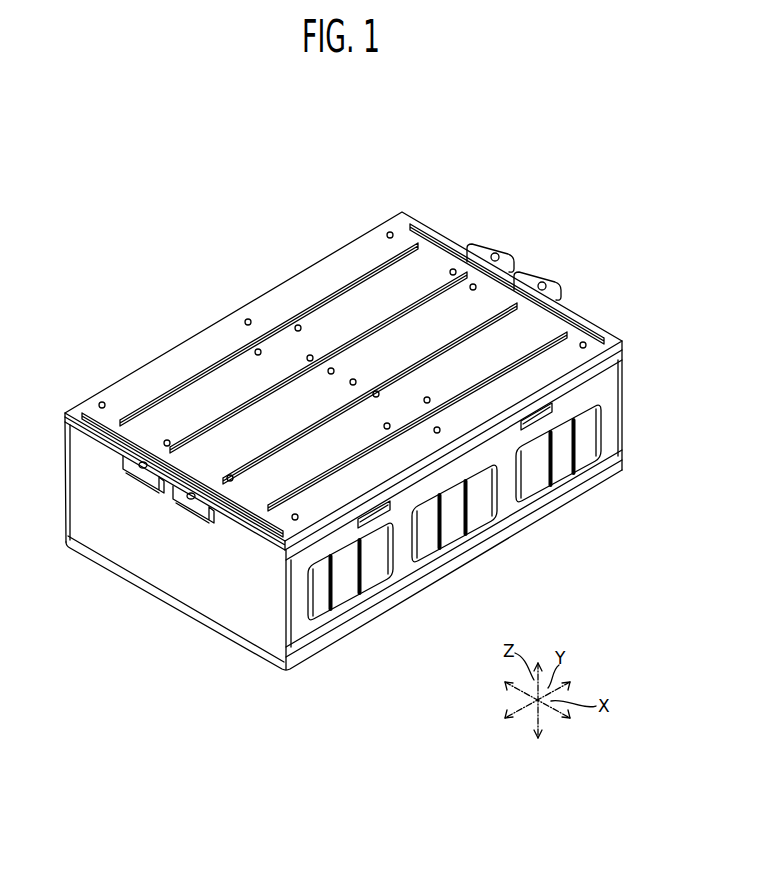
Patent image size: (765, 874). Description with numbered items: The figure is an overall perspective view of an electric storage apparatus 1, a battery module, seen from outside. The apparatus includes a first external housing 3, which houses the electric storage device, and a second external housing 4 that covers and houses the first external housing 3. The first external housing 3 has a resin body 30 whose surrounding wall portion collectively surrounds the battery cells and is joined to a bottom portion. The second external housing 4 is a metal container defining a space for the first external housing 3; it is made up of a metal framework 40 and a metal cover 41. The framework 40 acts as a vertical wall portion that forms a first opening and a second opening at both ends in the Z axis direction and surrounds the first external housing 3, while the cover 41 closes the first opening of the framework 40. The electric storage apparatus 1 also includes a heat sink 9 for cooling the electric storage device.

The electric storage apparatus 1 is at (365, 392).
The first external housing 3 is at (487, 388).
The resin body 30 is at (590, 430).
The second external housing 4 is at (349, 413).
The metal framework 40 is at (623, 352).
The metal cover 41 is at (495, 295).
The heat sink 9 is at (621, 470).